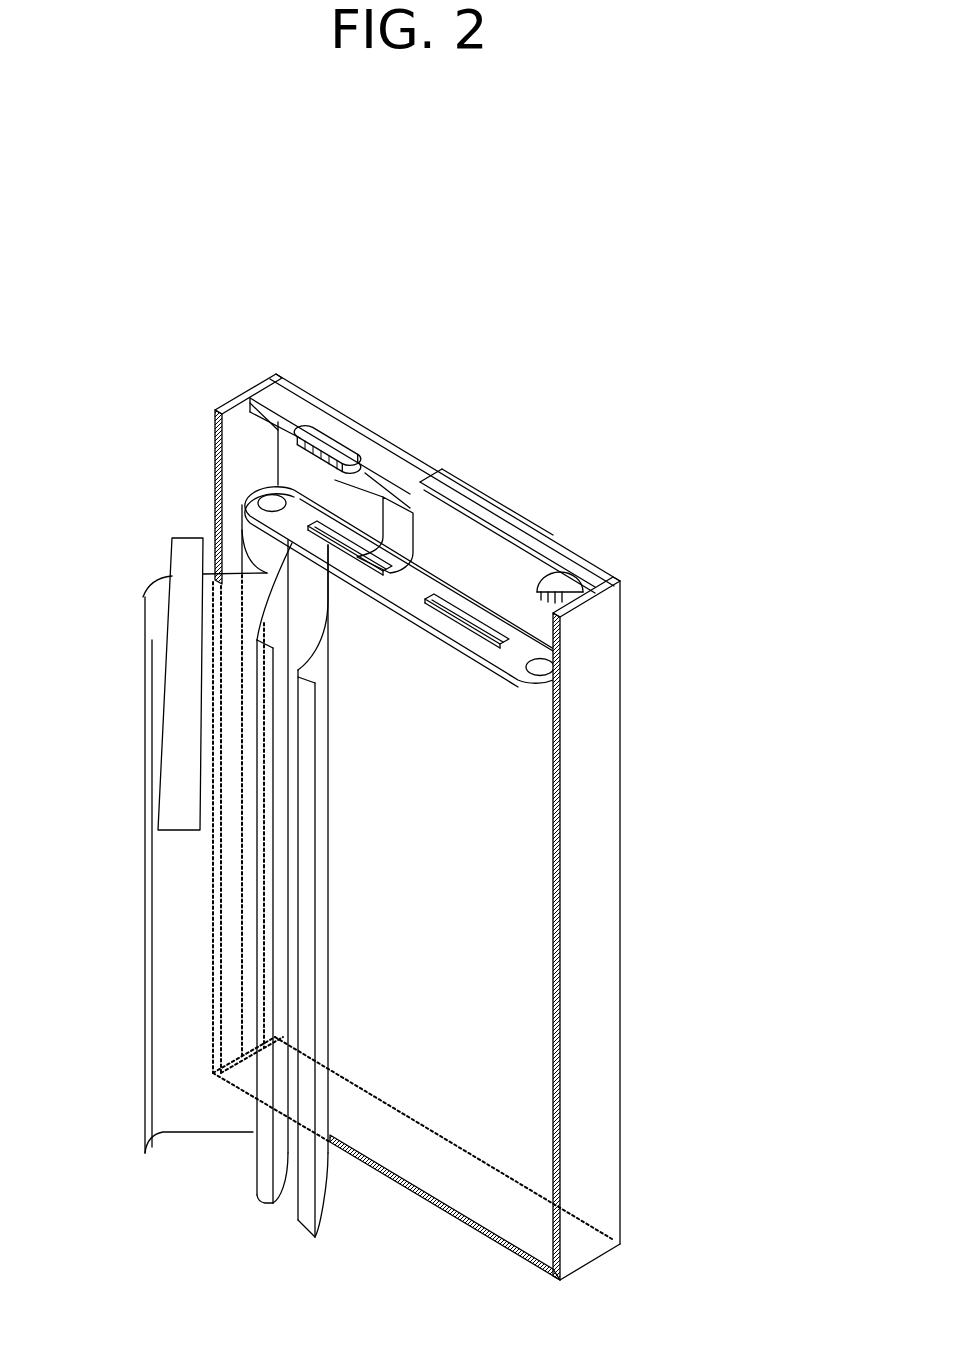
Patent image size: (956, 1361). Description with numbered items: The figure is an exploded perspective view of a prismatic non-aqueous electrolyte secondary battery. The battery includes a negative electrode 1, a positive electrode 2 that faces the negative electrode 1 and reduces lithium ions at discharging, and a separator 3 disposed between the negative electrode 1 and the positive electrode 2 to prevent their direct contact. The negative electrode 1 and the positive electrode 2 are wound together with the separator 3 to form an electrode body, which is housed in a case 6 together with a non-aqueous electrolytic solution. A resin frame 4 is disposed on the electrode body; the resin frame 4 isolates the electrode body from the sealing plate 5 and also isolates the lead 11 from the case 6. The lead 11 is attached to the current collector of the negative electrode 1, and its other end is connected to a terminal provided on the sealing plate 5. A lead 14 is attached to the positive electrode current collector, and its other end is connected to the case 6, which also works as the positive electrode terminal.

The negative electrode 1 is at (303, 1225).
The positive electrode 2 is at (158, 1097).
The separator 3 is at (263, 1160).
The resin frame 4 is at (523, 655).
The sealing plate 5 is at (287, 400).
The case 6 is at (608, 835).
The lead 11 is at (332, 486).
The lead 14 is at (182, 553).